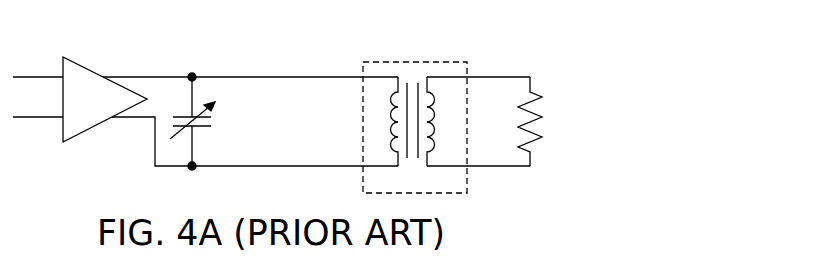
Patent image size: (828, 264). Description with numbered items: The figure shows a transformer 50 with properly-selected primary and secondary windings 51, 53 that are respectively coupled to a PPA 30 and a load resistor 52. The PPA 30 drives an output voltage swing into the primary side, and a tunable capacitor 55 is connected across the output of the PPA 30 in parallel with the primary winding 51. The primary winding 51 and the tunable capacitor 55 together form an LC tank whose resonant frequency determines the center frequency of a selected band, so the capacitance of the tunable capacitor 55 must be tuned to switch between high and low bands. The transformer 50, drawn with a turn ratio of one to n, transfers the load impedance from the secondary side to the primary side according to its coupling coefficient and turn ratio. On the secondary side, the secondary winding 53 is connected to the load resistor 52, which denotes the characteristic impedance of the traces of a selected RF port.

The PPA 30 is at (77, 64).
The tunable capacitor 55 is at (218, 119).
The transformer 50 is at (414, 110).
The primary winding 51 is at (385, 117).
The secondary winding 53 is at (440, 114).
The load resistor 52 is at (538, 124).